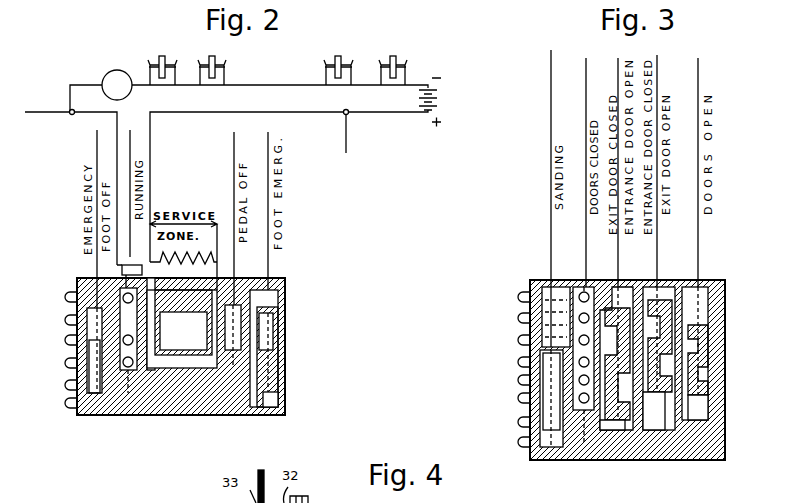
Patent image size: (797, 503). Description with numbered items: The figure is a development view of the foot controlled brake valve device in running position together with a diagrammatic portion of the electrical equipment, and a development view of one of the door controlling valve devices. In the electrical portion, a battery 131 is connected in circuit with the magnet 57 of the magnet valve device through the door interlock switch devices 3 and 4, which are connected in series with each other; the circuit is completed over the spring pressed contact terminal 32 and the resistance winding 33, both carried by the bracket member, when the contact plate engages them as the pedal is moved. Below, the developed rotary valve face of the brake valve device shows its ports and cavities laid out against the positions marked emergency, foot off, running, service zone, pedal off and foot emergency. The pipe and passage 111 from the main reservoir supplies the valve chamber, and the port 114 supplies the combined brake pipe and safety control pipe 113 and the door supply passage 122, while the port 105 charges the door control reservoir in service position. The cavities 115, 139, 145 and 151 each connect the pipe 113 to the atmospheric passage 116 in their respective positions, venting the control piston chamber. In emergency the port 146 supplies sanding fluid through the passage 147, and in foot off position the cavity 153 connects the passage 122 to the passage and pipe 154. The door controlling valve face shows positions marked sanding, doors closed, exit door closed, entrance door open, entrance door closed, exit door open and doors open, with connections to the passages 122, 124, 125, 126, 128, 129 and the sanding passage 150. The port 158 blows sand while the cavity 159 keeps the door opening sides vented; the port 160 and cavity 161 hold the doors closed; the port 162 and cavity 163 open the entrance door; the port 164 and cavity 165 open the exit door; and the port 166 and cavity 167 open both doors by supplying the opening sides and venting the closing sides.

In FIG. 2, the door interlock switch device 3 is at (164, 57).
In FIG. 2, the door interlock switch device 4 is at (214, 57).
In FIG. 2, the magnet 57 is at (117, 85).
In FIG. 2, the battery 131 is at (437, 104).
In FIG. 2, the contact terminal 32 is at (133, 265).
In FIG. 2, the resistance winding 33 is at (183, 258).
In FIG. 2, the cavity 151 is at (80, 278).
In FIG. 2, the port 105 is at (200, 362).
In FIG. 2, the cavity 153 is at (78, 418).
In FIG. 2, the port 114 is at (137, 353).
In FIG. 2, the cavity 139 is at (182, 324).
In FIG. 2, the cavity 115 is at (236, 352).
In FIG. 2, the cavity 145 is at (273, 328).
In FIG. 2, the port 146 is at (270, 399).
In FIG. 2, the pipe and passage 111 is at (67, 297).
In FIG. 2, the atmospheric passage 116 is at (67, 320).
In FIG. 2, the combined brake pipe and safety control pipe 113 is at (67, 340).
In FIG. 3, the combined brake pipe and safety control pipe 113 is at (520, 442).
In FIG. 2, the door supply passages and pipe 122 is at (67, 363).
In FIG. 3, the door supply passages and pipe 122 is at (520, 340).
In FIG. 2, the passage and pipe 154 is at (67, 385).
In FIG. 2, the passage 147 is at (67, 403).
In FIG. 3, the port 158 is at (546, 286).
In FIG. 3, the passage and pipe 150 is at (528, 453).
In FIG. 3, the port 160 is at (581, 287).
In FIG. 3, the cavity 161 is at (578, 412).
In FIG. 3, the port 162 is at (615, 288).
In FIG. 3, the cavity 163 is at (608, 428).
In FIG. 3, the port 164 is at (678, 290).
In FIG. 3, the cavity 165 is at (656, 428).
In FIG. 3, the port 166 is at (708, 348).
In FIG. 3, the cavity 167 is at (708, 424).
In FIG. 3, the passages and pipes 125 is at (520, 297).
In FIG. 3, the passages and pipes 124 is at (520, 318).
In FIG. 3, the passages and pipes 128 is at (520, 362).
In FIG. 3, the pipes and passages 129 is at (520, 380).
In FIG. 3, the cavity 159 is at (520, 398).
In FIG. 3, the pipes and passages 126 is at (520, 422).